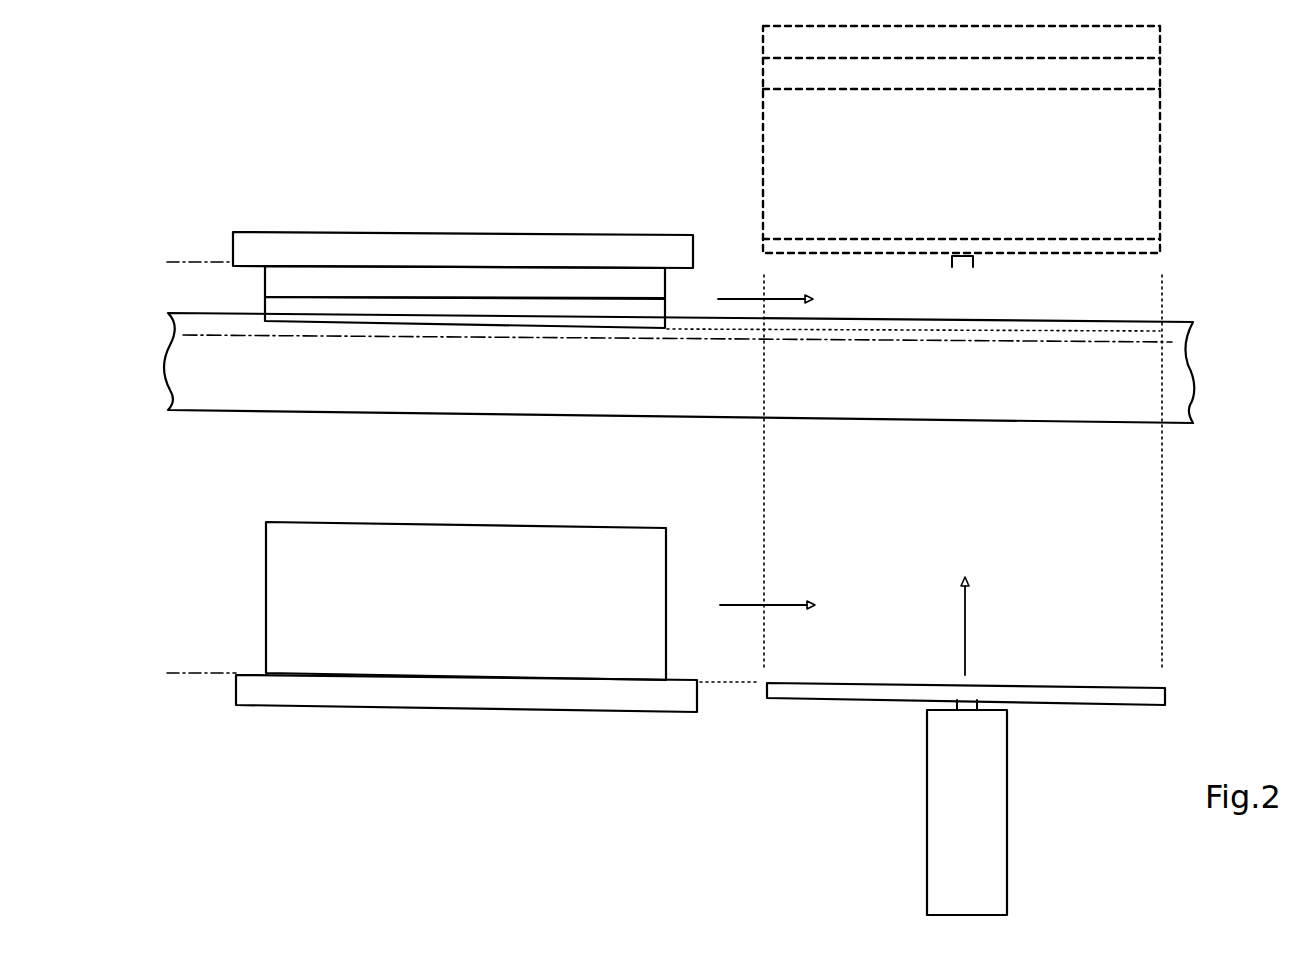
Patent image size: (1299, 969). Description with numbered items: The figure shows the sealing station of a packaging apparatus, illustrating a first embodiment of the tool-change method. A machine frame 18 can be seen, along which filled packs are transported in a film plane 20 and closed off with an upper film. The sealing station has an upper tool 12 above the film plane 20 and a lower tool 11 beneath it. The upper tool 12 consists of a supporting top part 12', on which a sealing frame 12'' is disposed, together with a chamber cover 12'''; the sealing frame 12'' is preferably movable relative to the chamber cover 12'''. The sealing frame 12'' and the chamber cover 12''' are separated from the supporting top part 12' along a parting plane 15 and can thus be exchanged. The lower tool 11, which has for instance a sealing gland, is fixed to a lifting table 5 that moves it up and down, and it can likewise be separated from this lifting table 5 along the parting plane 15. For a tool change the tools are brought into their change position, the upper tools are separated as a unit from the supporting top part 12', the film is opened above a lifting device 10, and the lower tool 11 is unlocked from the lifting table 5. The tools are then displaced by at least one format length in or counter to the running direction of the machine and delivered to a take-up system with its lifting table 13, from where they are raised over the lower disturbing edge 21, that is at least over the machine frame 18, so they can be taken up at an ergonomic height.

The lifting table 5 is at (372, 697).
The lifting device for the tool change 10 is at (937, 827).
The lower tool of the sealing station 11 is at (955, 178).
The upper tool of the sealing station 12 is at (509, 180).
The supporting top part 12' is at (449, 232).
The sealing frame 12'' is at (537, 165).
The chamber cover 12''' is at (539, 197).
The lifting table 13 is at (808, 690).
The parting plane 15 is at (184, 262).
The machine frame 18 is at (463, 393).
The film plane 20 is at (183, 336).
The lower disturbing edge 21 is at (807, 238).